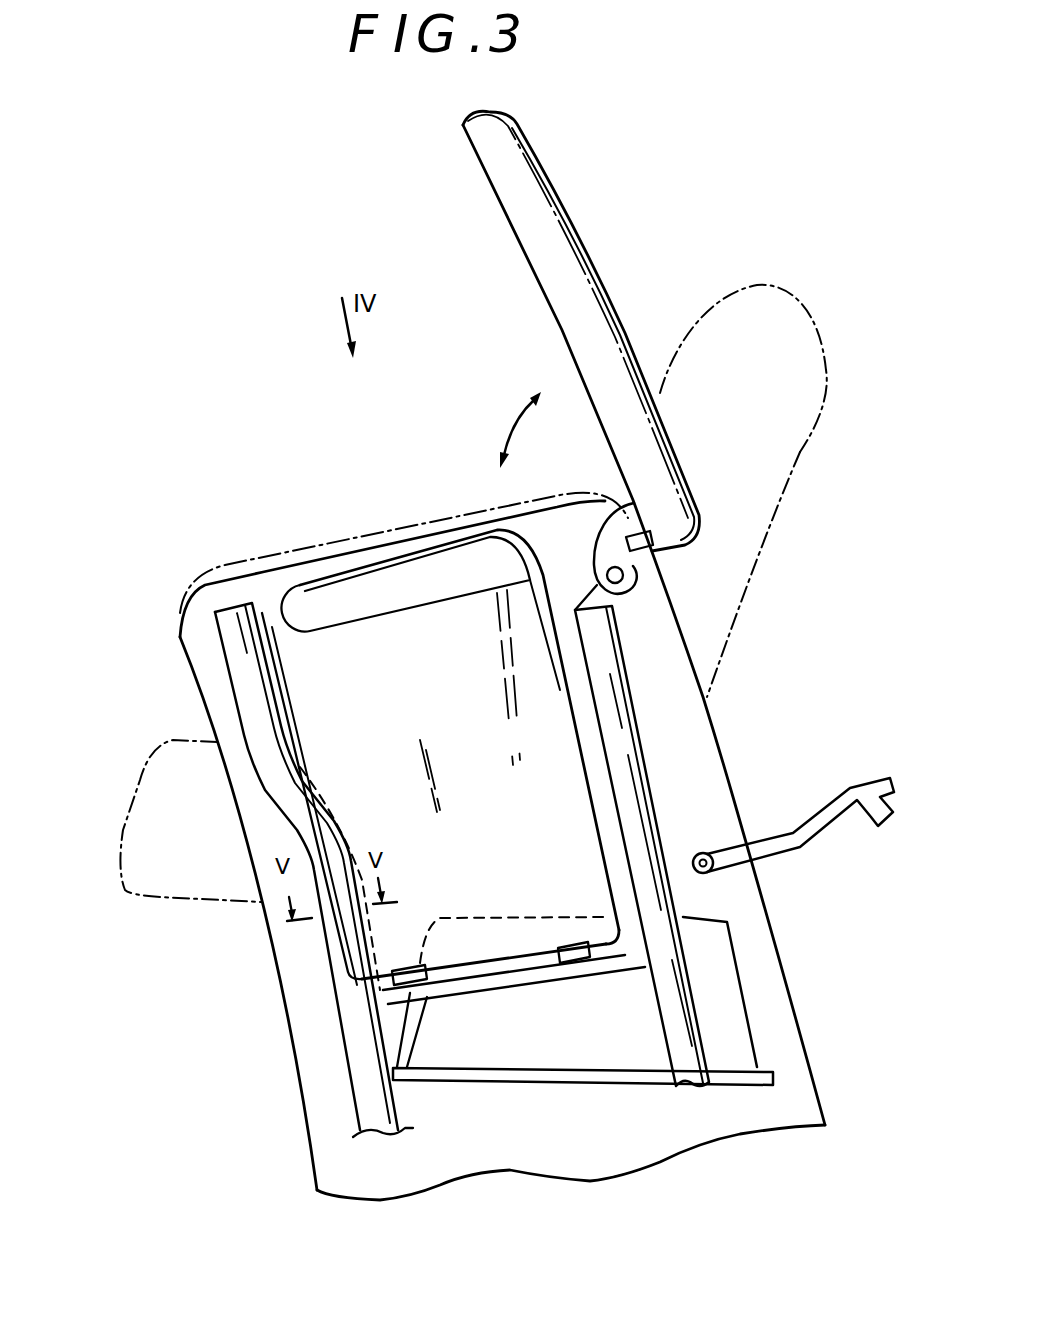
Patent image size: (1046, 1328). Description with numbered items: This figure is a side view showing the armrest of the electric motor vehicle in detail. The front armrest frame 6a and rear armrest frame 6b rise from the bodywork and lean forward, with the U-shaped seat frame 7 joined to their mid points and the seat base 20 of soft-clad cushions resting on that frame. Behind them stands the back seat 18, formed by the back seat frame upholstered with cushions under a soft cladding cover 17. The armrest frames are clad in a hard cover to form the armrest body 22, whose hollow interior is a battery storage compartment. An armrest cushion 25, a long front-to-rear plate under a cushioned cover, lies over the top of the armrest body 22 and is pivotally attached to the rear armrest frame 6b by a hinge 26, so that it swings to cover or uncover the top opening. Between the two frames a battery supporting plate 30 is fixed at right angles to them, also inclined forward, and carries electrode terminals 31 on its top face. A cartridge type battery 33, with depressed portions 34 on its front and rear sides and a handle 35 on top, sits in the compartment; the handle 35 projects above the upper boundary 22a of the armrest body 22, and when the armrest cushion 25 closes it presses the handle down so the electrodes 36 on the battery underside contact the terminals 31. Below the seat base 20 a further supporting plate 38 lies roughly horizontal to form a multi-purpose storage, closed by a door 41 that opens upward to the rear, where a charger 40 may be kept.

The armrest cushion 25 is at (576, 230).
The soft cladding cover 17 is at (824, 407).
The back seat 18 is at (777, 470).
The hinge 26 is at (640, 568).
The handle 35 is at (323, 562).
The upper boundary 22a is at (183, 637).
The front armrest frame 6a is at (238, 697).
The rear armrest frame 6b is at (607, 633).
The cartridge type battery 33 is at (606, 762).
The armrest body 22 is at (745, 790).
The door 41 is at (813, 827).
The charger 40 is at (727, 922).
The seat base 20 is at (122, 880).
The depressed portions 34 is at (369, 944).
The electrodes 36 is at (390, 985).
The battery supporting plate 30 is at (390, 1000).
The electrode terminals 31 is at (425, 985).
The supporting plate 38 is at (580, 1080).
The seat frame 7 is at (623, 1020).